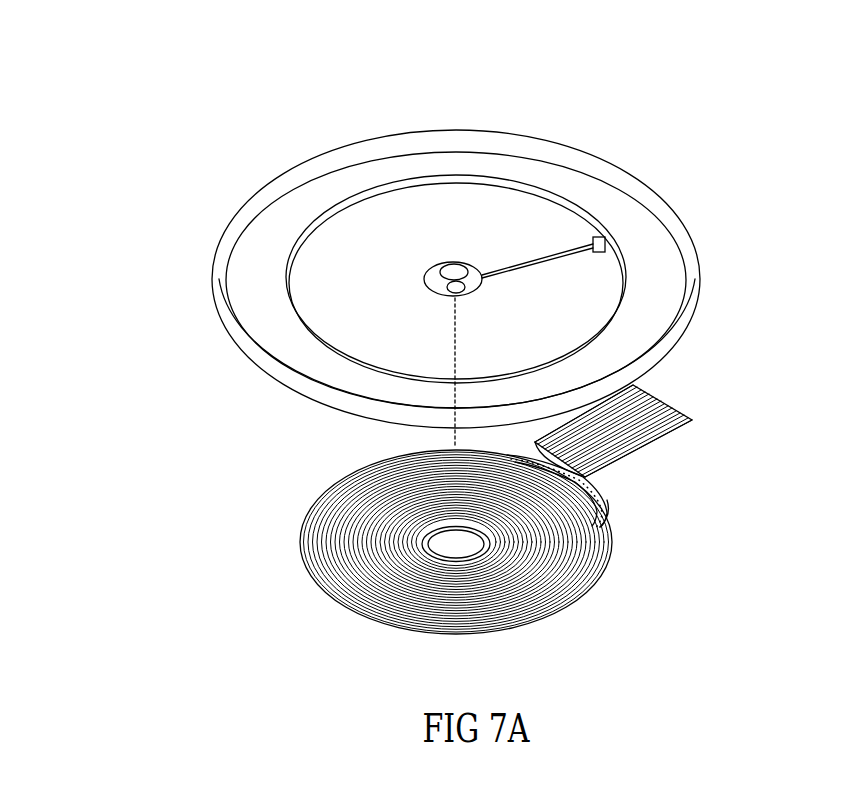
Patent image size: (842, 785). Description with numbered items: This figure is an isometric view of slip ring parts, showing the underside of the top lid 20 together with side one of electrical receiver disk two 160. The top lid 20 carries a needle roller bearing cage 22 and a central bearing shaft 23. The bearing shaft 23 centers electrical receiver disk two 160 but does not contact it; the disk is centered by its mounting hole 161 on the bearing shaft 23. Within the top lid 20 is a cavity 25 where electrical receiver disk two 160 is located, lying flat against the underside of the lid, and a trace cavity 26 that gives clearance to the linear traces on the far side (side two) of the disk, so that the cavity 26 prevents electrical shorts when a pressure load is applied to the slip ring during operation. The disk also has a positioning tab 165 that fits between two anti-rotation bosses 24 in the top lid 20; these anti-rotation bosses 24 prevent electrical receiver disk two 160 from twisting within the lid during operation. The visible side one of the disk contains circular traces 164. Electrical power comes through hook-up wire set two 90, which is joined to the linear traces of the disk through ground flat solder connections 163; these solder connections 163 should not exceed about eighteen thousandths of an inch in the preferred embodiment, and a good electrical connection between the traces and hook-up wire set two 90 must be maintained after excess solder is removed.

The top lid 20 is at (448, 237).
The needle roller bearing cage 22 is at (250, 222).
The bearing shaft 23 is at (480, 280).
The anti-rotation bosses 24 is at (458, 263).
The cavity 25 is at (393, 218).
The trace cavity 26 is at (603, 240).
The hook-up wire set two 90 is at (658, 440).
The electrical receiver disk two 160 is at (447, 557).
The mounting hole 161 is at (423, 538).
The ground flat solder connections 163 is at (600, 488).
The circular traces 164 is at (323, 592).
The positioning tab 165 is at (607, 502).